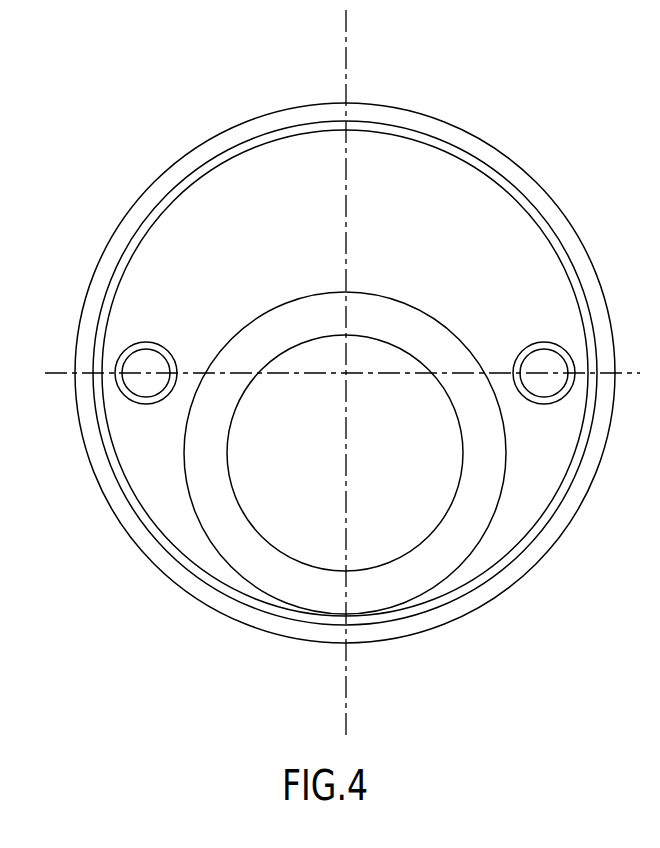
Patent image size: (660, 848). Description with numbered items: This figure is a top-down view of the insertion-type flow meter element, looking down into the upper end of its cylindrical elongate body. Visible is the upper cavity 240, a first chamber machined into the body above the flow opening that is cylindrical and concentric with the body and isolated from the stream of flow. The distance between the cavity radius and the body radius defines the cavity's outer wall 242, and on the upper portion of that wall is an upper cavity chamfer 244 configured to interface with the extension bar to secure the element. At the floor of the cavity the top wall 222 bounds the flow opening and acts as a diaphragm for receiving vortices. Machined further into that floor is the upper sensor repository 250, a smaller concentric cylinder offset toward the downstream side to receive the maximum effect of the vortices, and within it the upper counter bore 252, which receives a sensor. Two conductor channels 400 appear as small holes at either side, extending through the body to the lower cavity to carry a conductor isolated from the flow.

The top wall 222 is at (345, 354).
The upper cavity 240 is at (392, 167).
The outer wall 242 is at (527, 208).
The upper cavity chamfer 244 is at (497, 157).
The upper sensor repository 250 is at (407, 329).
The upper counter bore 252 is at (400, 432).
The conductor channels 400 is at (146, 350).